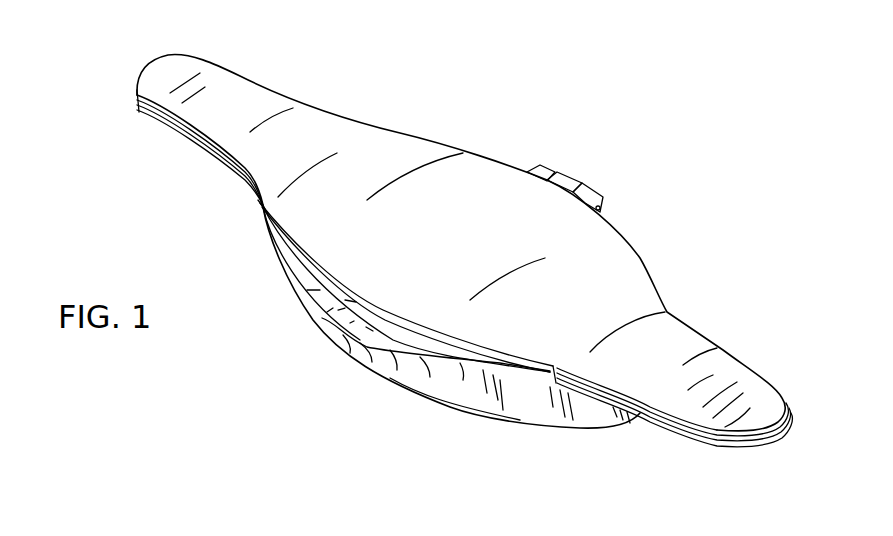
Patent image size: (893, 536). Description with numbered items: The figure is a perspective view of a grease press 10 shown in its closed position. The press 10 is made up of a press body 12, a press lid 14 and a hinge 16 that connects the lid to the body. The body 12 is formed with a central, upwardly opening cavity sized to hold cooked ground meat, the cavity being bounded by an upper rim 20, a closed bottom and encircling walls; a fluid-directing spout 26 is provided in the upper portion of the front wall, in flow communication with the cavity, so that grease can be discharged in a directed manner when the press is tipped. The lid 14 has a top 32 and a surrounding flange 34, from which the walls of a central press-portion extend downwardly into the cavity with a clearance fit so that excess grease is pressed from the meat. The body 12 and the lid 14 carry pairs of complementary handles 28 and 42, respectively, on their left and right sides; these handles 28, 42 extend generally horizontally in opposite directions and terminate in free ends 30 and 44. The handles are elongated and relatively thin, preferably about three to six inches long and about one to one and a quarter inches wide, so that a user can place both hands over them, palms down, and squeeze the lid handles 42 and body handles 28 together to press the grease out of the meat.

The grease press 10 is at (309, 377).
The press body 12 is at (514, 410).
The press lid 14 is at (461, 179).
The hinge 16 is at (587, 178).
The upper rim of body 20 is at (294, 268).
The spout 26 is at (332, 319).
The handles of body 28 is at (213, 165).
The free ends of handles 30 is at (140, 110).
The top of lid 32 is at (525, 324).
The flange of lid 34 is at (267, 230).
The handles of lid 42 is at (275, 107).
The free ends of handles 44 is at (170, 75).